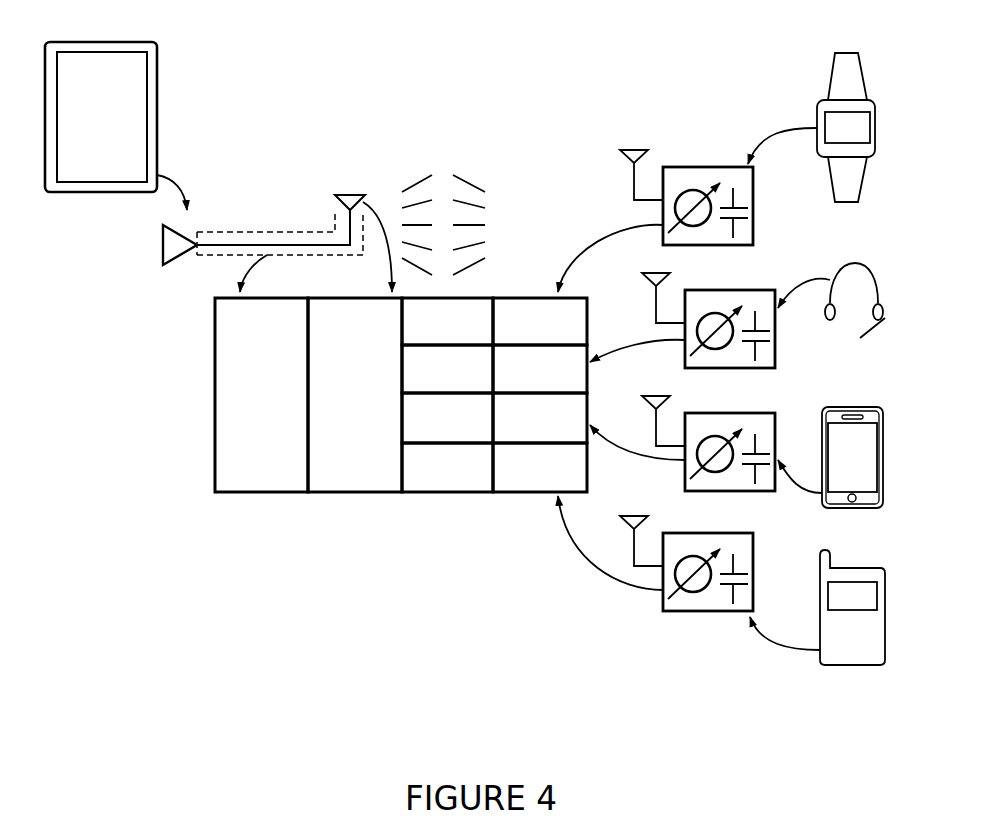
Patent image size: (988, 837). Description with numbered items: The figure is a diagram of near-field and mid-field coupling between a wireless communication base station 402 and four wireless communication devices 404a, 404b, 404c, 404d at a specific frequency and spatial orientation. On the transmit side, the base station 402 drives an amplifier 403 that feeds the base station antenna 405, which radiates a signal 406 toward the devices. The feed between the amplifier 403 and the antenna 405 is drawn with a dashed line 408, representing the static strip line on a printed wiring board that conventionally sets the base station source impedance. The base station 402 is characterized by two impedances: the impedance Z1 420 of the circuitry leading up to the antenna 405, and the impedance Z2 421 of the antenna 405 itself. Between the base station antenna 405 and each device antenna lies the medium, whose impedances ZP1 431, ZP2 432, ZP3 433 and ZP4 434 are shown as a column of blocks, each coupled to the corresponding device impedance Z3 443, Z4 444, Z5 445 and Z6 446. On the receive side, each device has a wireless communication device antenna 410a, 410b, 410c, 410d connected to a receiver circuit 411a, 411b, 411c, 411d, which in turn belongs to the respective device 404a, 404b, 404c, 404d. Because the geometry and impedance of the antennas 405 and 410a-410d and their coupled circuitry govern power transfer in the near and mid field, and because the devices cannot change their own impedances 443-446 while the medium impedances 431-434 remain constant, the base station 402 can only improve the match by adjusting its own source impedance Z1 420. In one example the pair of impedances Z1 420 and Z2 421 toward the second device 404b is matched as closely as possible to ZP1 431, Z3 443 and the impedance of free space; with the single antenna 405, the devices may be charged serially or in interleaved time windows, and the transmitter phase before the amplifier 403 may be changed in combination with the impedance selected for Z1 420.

The wireless communication base station 402 is at (87, 42).
The amplifier 403 is at (181, 242).
The base station antenna 405 is at (350, 194).
The radiated wireless signal 406 is at (442, 163).
The dashed line 408 is at (280, 233).
The impedance Z1 420 is at (258, 405).
The impedance Z2 421 is at (351, 405).
The impedance ZP1 431 is at (436, 323).
The impedance ZP2 432 is at (436, 371).
The impedance ZP3 433 is at (436, 421).
The impedance ZP4 434 is at (436, 470).
The impedance Z3 443 is at (536, 331).
The impedance Z4 444 is at (536, 379).
The impedance Z5 445 is at (536, 428).
The impedance Z6 446 is at (536, 476).
The wireless communication device antenna 410a is at (651, 142).
The wireless communication device antenna 410b is at (663, 287).
The wireless communication device antenna 410c is at (663, 410).
The wireless communication device antenna 410d is at (641, 530).
The receiver circuit with voltmeter and capacitor 411a is at (711, 184).
The receiver circuit with voltmeter and capacitor 411b is at (730, 329).
The receiver circuit with voltmeter and capacitor 411c is at (730, 452).
The receiver circuit with voltmeter and capacitor 411d is at (708, 572).
The wireless communication device 404a is at (858, 53).
The wireless communication device 404b is at (855, 263).
The wireless communication device 404c is at (850, 407).
The wireless communication device 404d is at (850, 568).